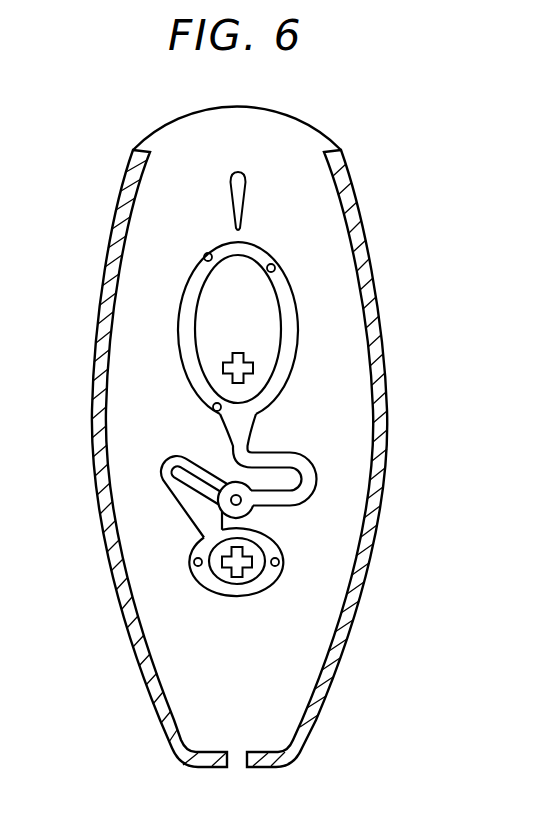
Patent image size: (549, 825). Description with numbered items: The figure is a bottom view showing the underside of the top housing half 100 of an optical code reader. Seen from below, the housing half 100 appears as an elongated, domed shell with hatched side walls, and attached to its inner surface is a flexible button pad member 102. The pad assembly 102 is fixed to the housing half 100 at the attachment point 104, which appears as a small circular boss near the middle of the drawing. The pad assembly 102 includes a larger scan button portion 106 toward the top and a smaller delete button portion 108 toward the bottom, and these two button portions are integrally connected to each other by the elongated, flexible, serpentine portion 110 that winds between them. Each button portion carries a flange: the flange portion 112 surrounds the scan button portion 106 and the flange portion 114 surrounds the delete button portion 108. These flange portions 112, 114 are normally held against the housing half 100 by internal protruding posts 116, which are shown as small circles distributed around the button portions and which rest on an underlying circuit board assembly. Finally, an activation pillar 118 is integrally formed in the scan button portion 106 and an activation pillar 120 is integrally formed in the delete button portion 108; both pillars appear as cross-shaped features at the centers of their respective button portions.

The top housing half 100 is at (362, 203).
The flexible button pad member 102 is at (292, 370).
The attachment point 104 is at (246, 503).
The scan button portion 106 is at (264, 310).
The delete button portion 108 is at (276, 580).
The serpentine portion 110 is at (305, 480).
The flange portion 112 is at (188, 302).
The flange portion 114 is at (222, 583).
The internal protruding posts 116 is at (205, 254).
The activation pillar 118 is at (223, 368).
The activation pillar 120 is at (233, 578).